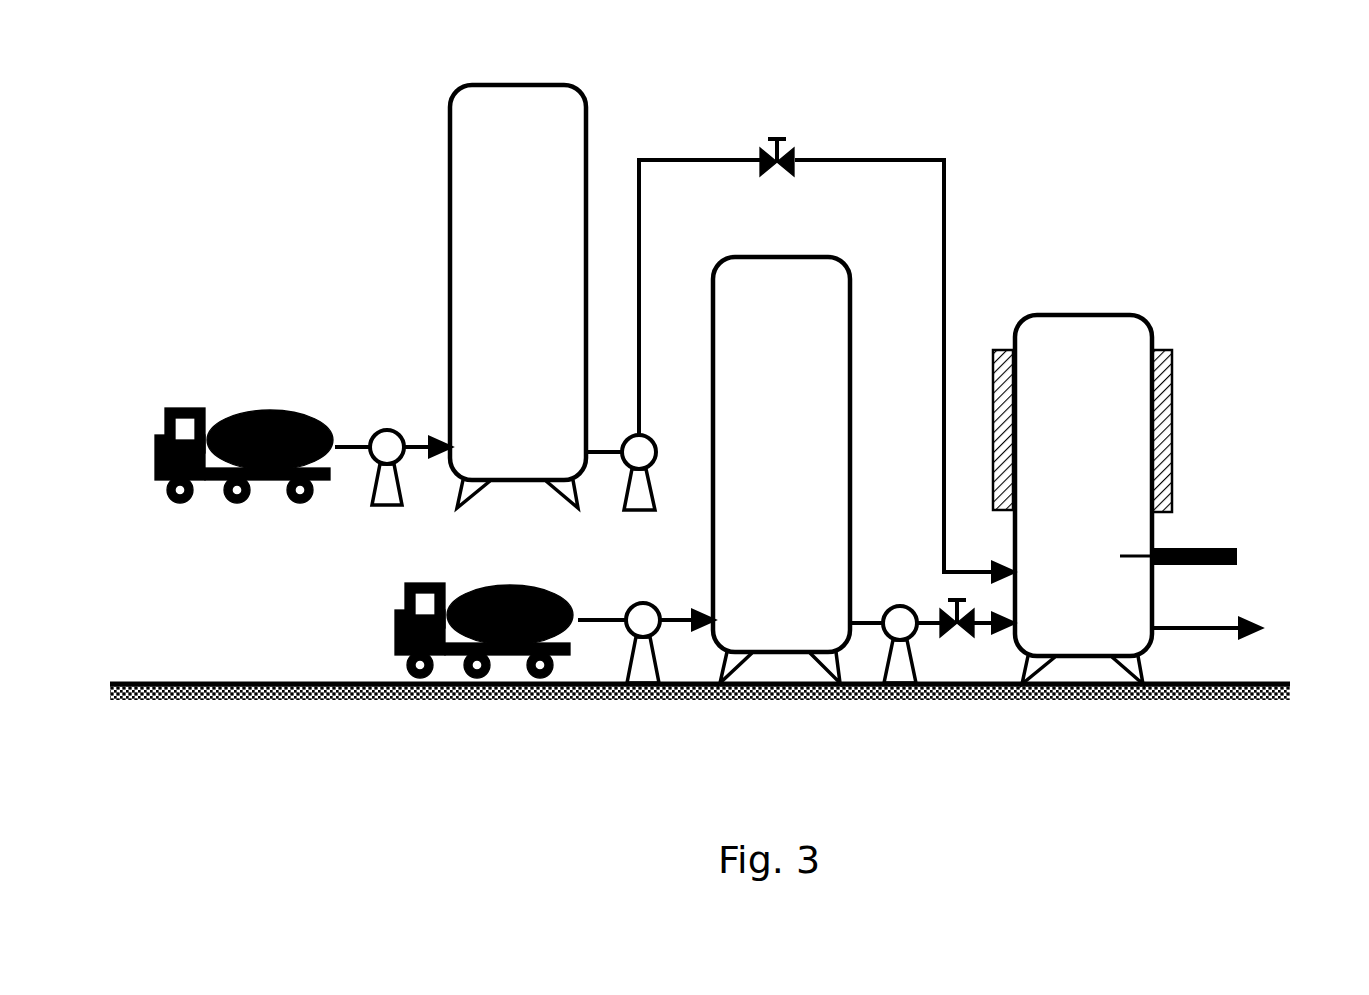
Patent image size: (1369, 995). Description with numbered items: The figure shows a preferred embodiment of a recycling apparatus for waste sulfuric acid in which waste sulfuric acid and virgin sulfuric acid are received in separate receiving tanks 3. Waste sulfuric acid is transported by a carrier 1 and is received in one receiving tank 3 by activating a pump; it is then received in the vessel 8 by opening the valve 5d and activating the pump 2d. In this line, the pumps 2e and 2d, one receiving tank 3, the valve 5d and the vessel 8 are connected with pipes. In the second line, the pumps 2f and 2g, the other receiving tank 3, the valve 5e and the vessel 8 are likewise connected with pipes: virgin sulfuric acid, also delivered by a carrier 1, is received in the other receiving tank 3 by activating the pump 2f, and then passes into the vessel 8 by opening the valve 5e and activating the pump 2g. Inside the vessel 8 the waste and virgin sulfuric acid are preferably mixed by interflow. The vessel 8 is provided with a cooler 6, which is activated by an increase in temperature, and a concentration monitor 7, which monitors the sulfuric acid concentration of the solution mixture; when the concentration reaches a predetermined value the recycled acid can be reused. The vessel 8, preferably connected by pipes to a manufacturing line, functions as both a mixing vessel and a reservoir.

The carrier 1 is at (266, 415).
The pump 2d is at (638, 452).
The pump 2e is at (382, 438).
The pump 2f is at (637, 660).
The pump 2g is at (897, 662).
The receiving tank 3 is at (473, 173).
The valve 5d is at (785, 147).
The valve 5e is at (957, 635).
The cooler 6 is at (1152, 350).
The concentration monitor 7 is at (1188, 548).
The vessel 8 is at (1080, 565).